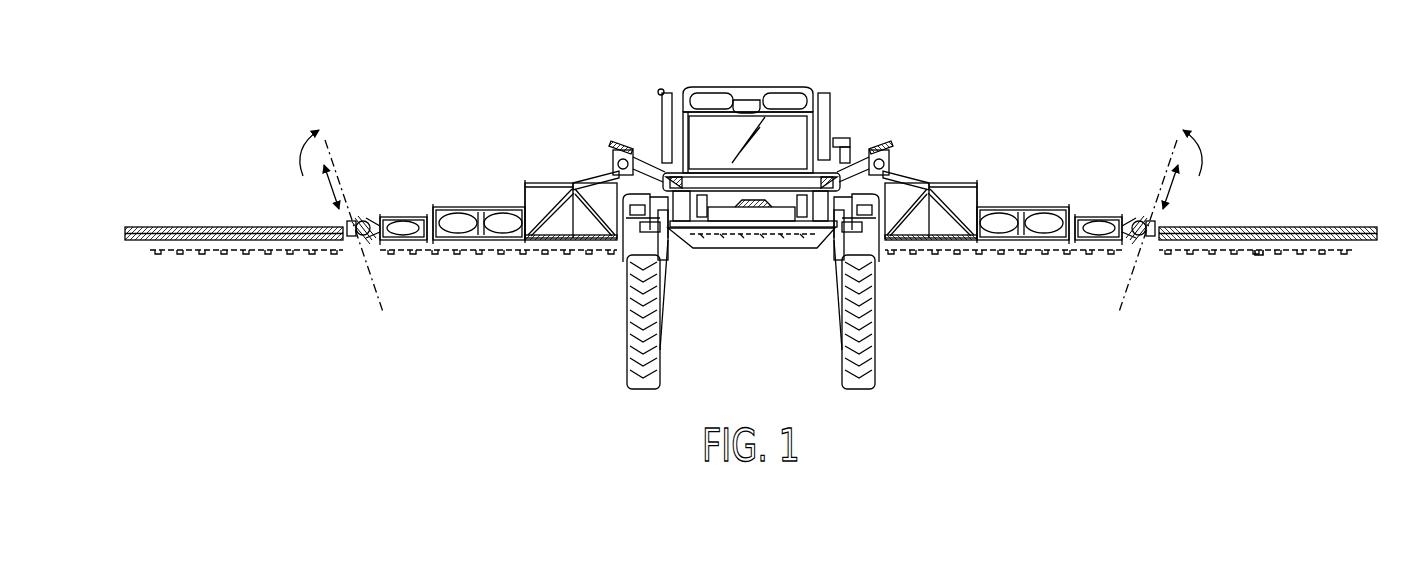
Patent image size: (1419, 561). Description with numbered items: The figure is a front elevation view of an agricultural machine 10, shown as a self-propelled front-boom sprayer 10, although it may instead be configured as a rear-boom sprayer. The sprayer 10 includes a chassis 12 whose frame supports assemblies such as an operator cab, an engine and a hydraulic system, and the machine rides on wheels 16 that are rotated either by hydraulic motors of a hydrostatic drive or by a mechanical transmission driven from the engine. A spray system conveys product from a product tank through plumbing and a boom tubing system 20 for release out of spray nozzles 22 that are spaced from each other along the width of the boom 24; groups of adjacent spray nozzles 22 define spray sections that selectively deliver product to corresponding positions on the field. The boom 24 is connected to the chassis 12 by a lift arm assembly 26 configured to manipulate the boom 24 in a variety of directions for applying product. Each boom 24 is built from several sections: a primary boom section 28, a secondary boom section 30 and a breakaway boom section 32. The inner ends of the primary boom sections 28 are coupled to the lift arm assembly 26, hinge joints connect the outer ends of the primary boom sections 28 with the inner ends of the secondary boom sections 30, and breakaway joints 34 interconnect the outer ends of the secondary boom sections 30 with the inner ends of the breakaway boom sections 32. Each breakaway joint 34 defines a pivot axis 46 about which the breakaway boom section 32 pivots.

The agricultural machine 10 is at (817, 83).
The chassis 12 is at (707, 259).
The wheels 16 is at (632, 319).
The boom tubing system 20 is at (1364, 250).
The spray nozzles 22 is at (1259, 258).
The boom 24 is at (957, 176).
The lift arm assembly 26 is at (719, 162).
The primary boom section 28 is at (585, 168).
The secondary boom section 30 is at (466, 198).
The breakaway boom section 32 is at (213, 219).
The breakaway joint 34 is at (382, 259).
The pivot axis 46 is at (341, 191).